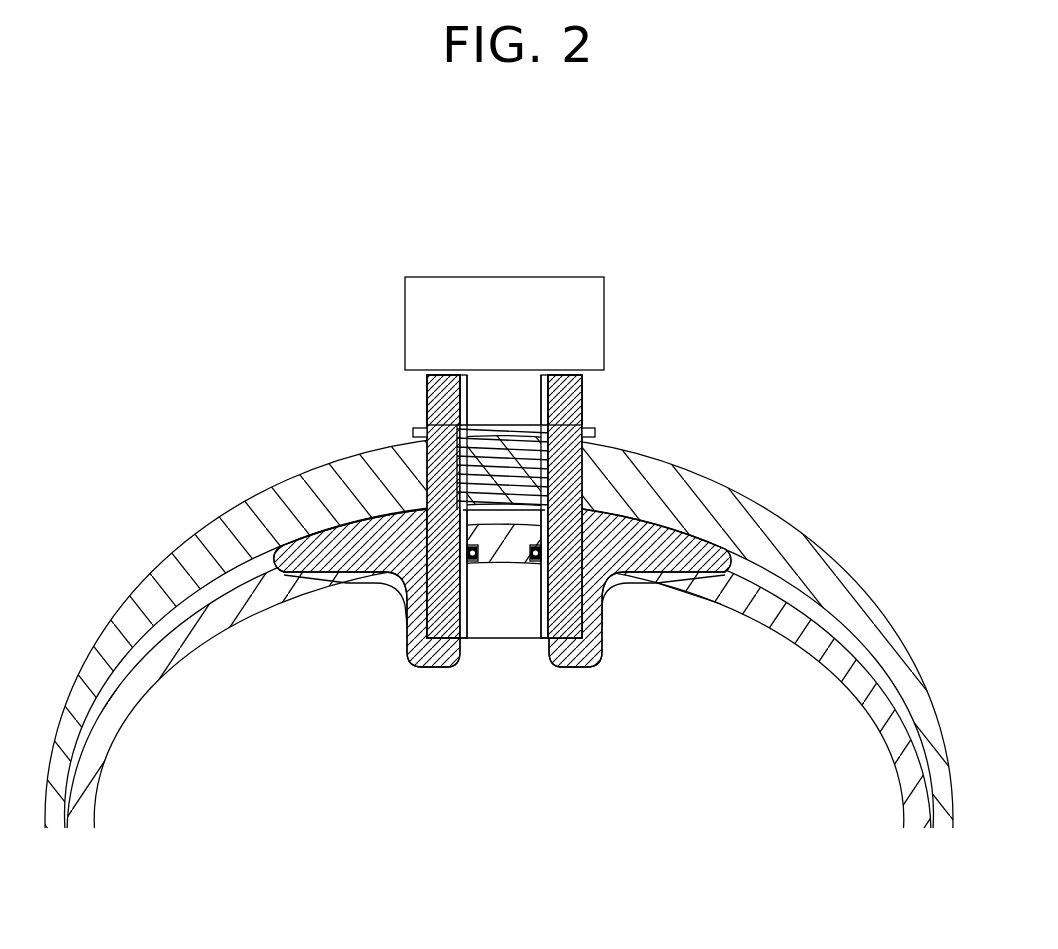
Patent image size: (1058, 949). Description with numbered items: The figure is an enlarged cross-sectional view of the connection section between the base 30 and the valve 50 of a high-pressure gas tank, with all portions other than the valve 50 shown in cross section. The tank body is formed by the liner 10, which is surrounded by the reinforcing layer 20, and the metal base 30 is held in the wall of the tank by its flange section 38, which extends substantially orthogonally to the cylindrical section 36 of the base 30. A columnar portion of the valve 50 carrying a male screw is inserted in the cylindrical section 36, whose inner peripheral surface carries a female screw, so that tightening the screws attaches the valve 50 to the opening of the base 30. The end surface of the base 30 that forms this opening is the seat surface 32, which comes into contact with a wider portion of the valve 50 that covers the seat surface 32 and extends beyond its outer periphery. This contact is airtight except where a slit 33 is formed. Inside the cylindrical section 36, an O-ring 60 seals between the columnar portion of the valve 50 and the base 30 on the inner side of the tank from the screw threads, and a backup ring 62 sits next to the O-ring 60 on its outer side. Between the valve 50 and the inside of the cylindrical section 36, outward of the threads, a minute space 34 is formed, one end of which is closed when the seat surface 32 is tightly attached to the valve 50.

The liner 10 is at (213, 604).
The reinforcing layer 20 is at (217, 528).
The base 30 is at (347, 522).
The seat surface 32 is at (566, 370).
The slit 33 is at (427, 378).
The space 34 is at (583, 388).
The cylindrical section 36 is at (585, 420).
The flange section 38 is at (722, 553).
The valve 50 is at (427, 300).
The O-ring 60 is at (562, 553).
The backup ring 62 is at (598, 546).